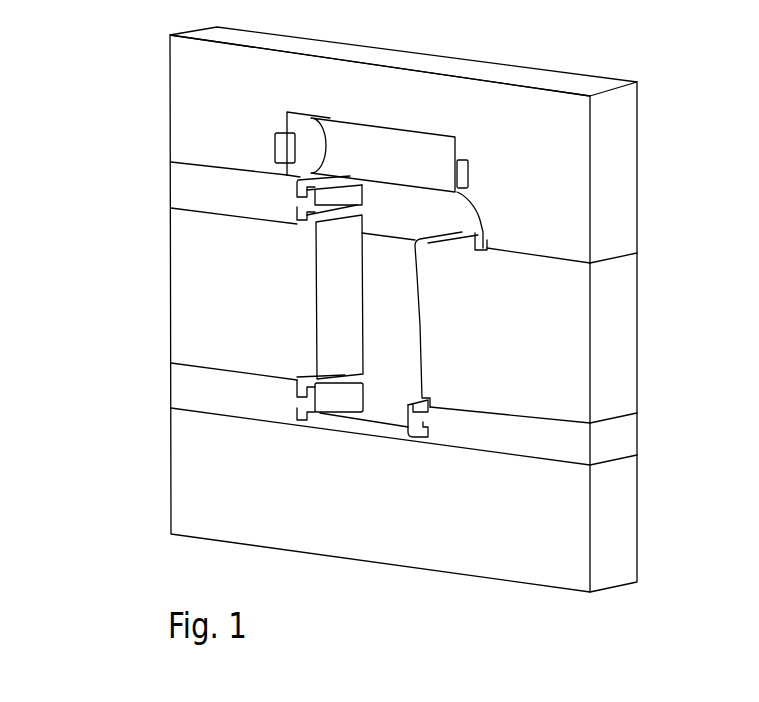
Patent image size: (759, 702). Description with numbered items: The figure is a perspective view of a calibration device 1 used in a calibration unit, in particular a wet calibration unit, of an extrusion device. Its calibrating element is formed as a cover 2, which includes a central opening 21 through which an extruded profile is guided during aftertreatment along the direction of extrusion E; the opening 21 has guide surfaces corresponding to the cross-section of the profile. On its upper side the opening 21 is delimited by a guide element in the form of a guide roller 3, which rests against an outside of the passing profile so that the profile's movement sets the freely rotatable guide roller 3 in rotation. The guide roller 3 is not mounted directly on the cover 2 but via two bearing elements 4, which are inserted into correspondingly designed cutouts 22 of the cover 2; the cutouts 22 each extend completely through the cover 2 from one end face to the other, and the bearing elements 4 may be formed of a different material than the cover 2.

The calibration device 1 is at (150, 83).
The cover 2 is at (658, 215).
The guide roller 3 is at (373, 145).
The bearing element 4 is at (278, 148).
The central opening 21 is at (413, 325).
The cutout 22 is at (283, 134).
The direction of extrusion E is at (345, 309).